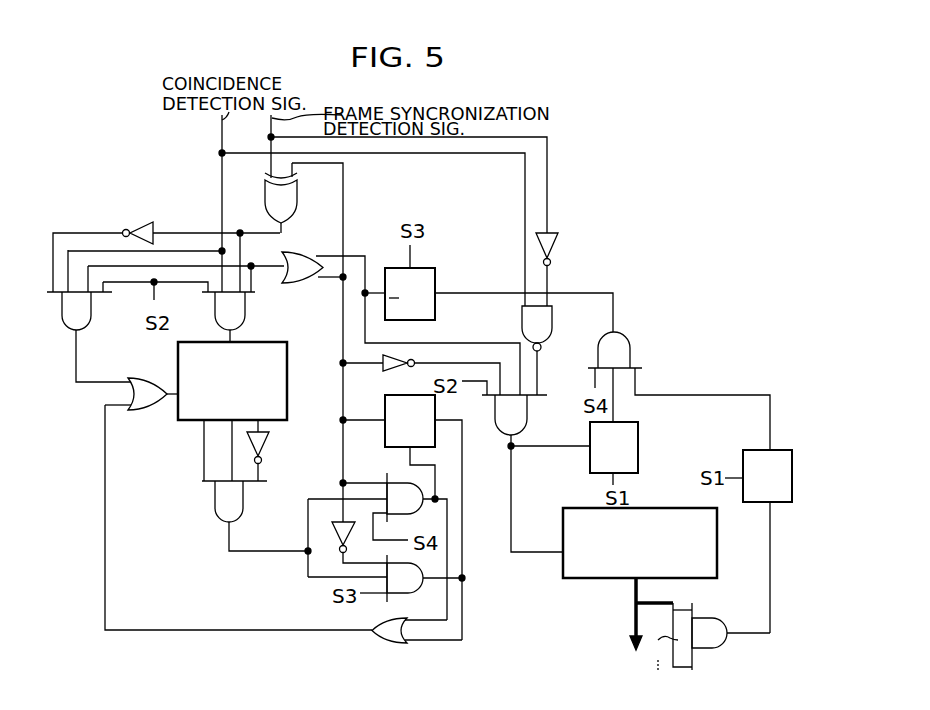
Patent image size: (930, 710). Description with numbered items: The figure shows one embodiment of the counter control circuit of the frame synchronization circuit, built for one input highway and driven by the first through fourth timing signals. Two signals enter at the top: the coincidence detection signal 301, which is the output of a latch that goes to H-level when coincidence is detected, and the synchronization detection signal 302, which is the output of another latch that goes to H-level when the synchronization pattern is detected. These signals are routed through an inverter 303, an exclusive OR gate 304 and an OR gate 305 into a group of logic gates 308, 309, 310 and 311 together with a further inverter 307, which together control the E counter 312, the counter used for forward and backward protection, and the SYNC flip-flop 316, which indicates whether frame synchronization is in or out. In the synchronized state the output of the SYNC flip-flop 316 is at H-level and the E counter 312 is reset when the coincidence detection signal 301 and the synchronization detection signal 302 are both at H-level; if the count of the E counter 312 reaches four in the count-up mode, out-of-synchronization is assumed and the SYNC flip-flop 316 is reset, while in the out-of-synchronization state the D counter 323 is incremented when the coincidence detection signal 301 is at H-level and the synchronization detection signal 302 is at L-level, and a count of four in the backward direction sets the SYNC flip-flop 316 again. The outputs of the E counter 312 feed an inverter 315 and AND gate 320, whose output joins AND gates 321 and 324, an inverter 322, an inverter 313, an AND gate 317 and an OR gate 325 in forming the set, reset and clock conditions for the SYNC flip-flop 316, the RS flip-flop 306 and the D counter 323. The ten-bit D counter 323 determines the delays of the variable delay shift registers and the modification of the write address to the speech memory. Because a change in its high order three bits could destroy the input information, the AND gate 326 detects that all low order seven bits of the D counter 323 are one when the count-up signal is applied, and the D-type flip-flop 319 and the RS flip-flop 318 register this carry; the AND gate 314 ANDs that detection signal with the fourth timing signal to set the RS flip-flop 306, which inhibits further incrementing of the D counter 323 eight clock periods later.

The coincidence detection signal 301 is at (220, 150).
The synchronization detection signal 302 is at (271, 137).
The inverter 303 is at (150, 222).
The exclusive OR gate 304 is at (300, 194).
The OR gate 305 is at (310, 252).
The RS flip-flop 306 is at (436, 275).
The inverter 307 is at (558, 243).
The AND gate 308 is at (92, 320).
The AND gate 309 is at (246, 318).
The NAND gate 310 is at (553, 325).
The OR gate 311 is at (150, 379).
The counter (E CNT) 312 is at (288, 350).
The inverter 313 is at (383, 373).
The AND gate 314 is at (631, 342).
The inverter 315 is at (268, 442).
The flip-flop (SYNC FF) 316 is at (384, 444).
The AND gate 317 is at (528, 430).
The flip-flop 318 is at (639, 448).
The D-type flip-flop 319 is at (744, 450).
The AND gate 320 is at (244, 515).
The AND gate 321 is at (424, 491).
The inverter 322 is at (342, 521).
The 10-bit counter (D CNT) 323 is at (672, 508).
The AND gate 324 is at (422, 595).
The OR gate 325 is at (393, 645).
The AND gate 326 is at (713, 618).